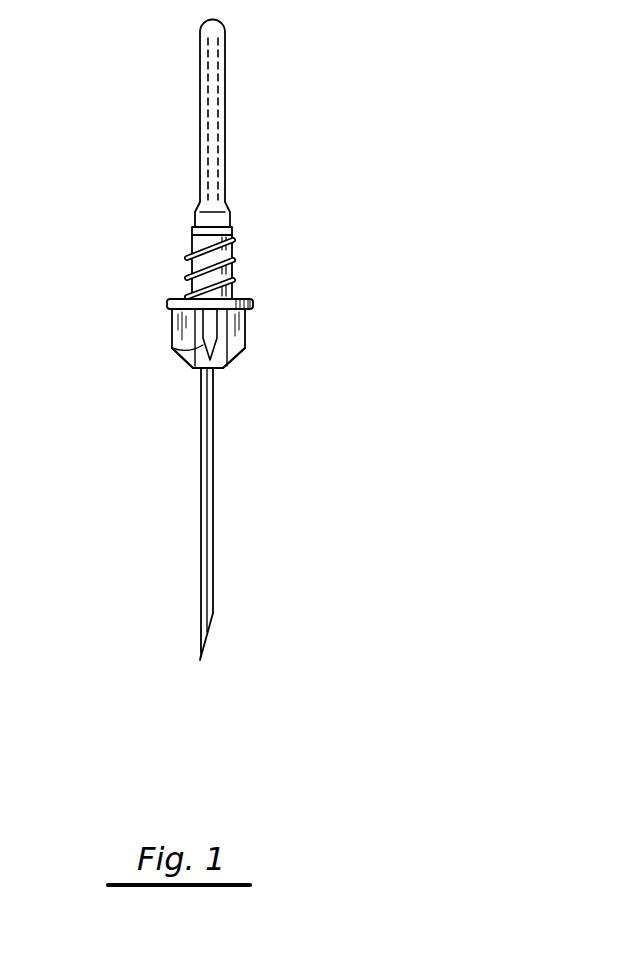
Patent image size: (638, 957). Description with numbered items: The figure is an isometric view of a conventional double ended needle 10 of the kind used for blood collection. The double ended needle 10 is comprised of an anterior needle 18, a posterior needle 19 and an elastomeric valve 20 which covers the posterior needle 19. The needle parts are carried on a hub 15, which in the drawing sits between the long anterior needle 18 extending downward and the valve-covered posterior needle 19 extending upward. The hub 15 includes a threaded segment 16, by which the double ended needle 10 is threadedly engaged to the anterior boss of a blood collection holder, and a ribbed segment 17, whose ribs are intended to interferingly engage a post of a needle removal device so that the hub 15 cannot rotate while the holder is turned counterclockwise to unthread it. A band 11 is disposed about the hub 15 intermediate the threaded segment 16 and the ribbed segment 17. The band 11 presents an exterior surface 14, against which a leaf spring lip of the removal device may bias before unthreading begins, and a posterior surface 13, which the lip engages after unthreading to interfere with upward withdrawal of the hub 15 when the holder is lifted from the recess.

The double ended needle 10 is at (403, 170).
The band 11 is at (168, 304).
The posterior surface 13 is at (180, 298).
The exterior surface 14 is at (253, 305).
The hub 15 is at (265, 322).
The threaded segment 16 is at (233, 240).
The ribbed segment 17 is at (180, 360).
The anterior needle 18 is at (212, 525).
The posterior needle 19 is at (213, 132).
The elastomeric valve 20 is at (200, 42).